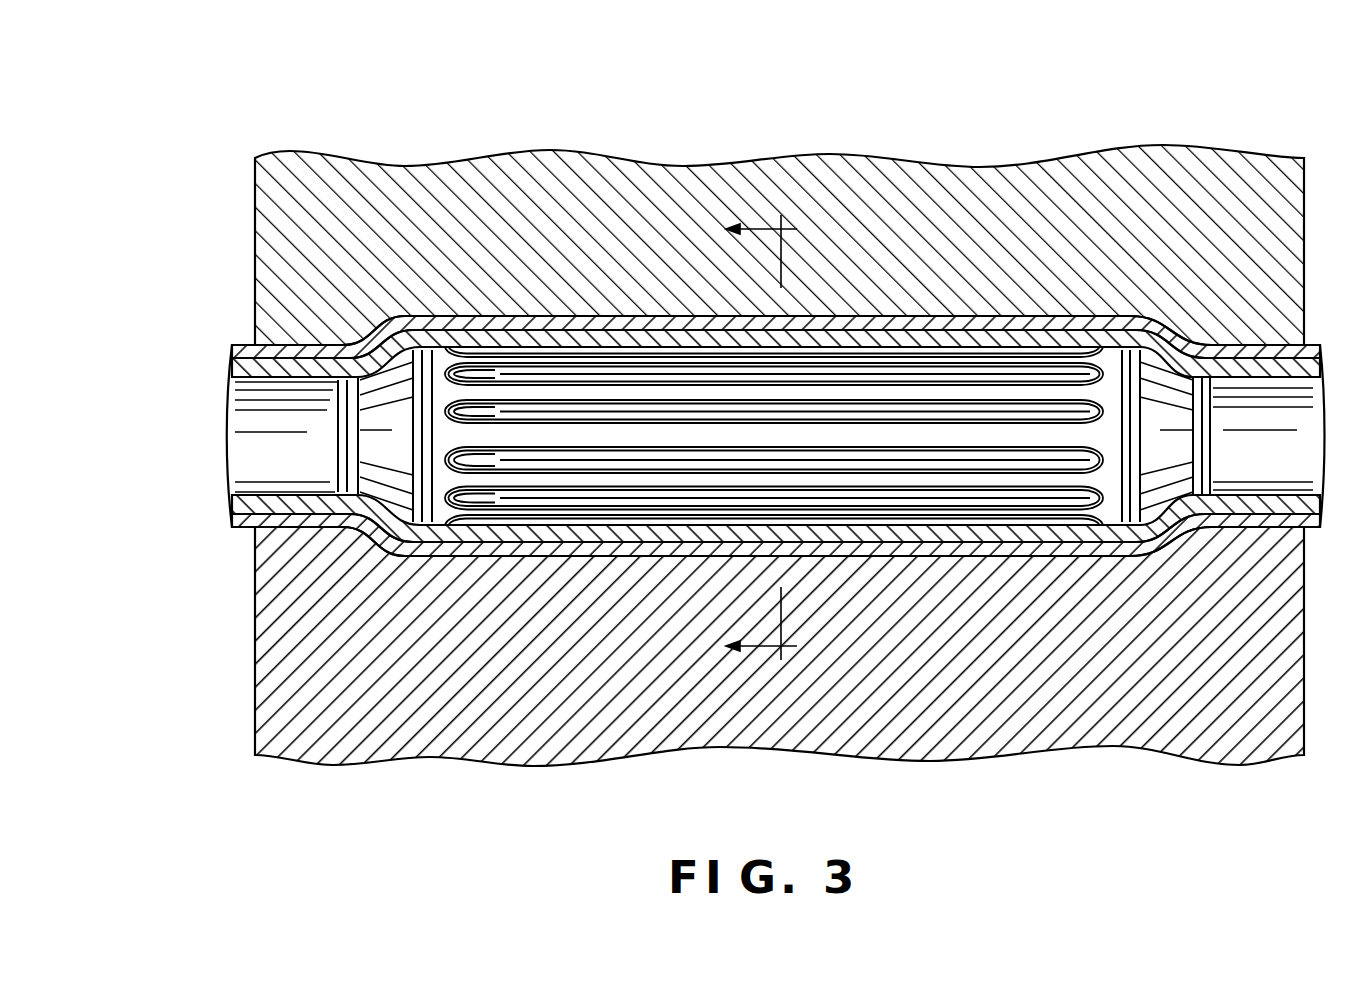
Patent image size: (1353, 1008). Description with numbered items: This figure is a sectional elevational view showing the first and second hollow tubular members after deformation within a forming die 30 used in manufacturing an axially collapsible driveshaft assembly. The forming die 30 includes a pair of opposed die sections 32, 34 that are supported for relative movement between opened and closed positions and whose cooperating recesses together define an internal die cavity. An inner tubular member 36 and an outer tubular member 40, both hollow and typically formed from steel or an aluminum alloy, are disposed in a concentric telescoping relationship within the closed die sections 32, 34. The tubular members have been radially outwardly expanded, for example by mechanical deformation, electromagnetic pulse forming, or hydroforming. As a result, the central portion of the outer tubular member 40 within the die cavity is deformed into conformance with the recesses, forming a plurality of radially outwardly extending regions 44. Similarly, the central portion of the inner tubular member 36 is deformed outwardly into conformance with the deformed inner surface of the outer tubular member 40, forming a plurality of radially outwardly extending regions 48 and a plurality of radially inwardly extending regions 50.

The forming die 30 is at (228, 170).
The die section 32 is at (413, 180).
The die section 34 is at (430, 750).
The inner tubular member 36 is at (238, 506).
The outer tubular member 40 is at (237, 522).
The radially outwardly extending regions 44 is at (867, 318).
The radially outwardly extending regions 48 is at (1008, 337).
The radially inwardly extending regions 50 is at (1072, 390).